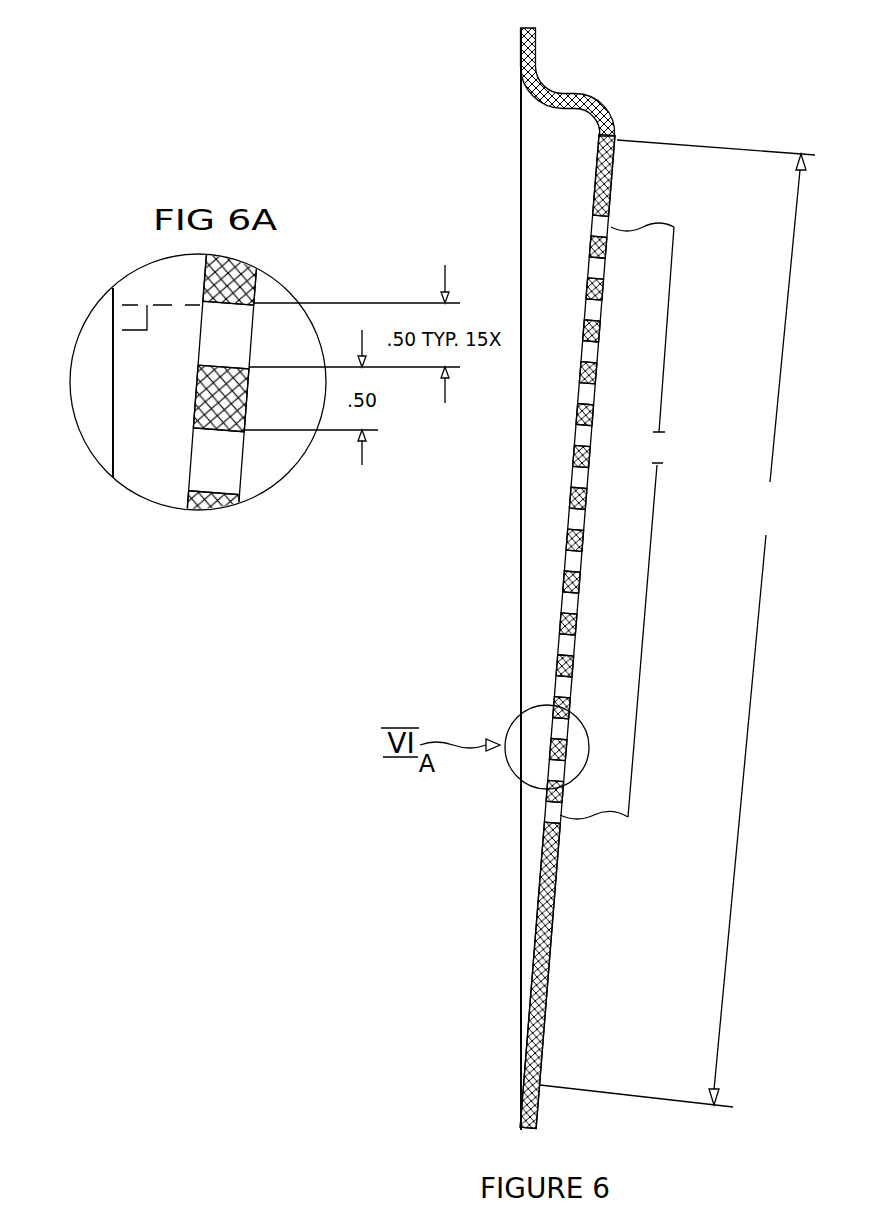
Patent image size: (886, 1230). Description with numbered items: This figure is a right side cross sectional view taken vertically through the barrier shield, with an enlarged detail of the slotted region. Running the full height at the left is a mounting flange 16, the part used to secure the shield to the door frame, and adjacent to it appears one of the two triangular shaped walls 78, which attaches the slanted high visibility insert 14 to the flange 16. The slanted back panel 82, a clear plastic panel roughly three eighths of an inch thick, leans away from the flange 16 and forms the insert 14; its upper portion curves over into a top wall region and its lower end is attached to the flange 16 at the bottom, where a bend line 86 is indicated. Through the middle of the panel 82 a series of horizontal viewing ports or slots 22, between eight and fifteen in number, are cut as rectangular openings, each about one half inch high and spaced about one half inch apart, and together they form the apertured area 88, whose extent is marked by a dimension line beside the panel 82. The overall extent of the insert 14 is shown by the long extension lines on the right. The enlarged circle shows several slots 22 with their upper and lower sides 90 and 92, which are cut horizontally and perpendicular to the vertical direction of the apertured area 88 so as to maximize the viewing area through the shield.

In FIG. 6, the slanted high visibility insert 14 is at (677, 623).
In FIG. 6, the mounting flanges 16 is at (535, 50).
In FIG. 6, the horizontal viewing ports 22 is at (598, 352).
In FIG. 6A, the horizontal viewing ports 22 is at (197, 457).
In FIG. 6, the triangular shaped walls 78 is at (552, 182).
In FIG. 6, the slanted back panel 82 is at (617, 164).
In FIG. 6, the bend lines 86 is at (540, 1069).
In FIG. 6, the apertured area 88 is at (625, 521).
In FIG. 6A, the side of slot 90 is at (222, 306).
In FIG. 6A, the side of slot 92 is at (224, 367).